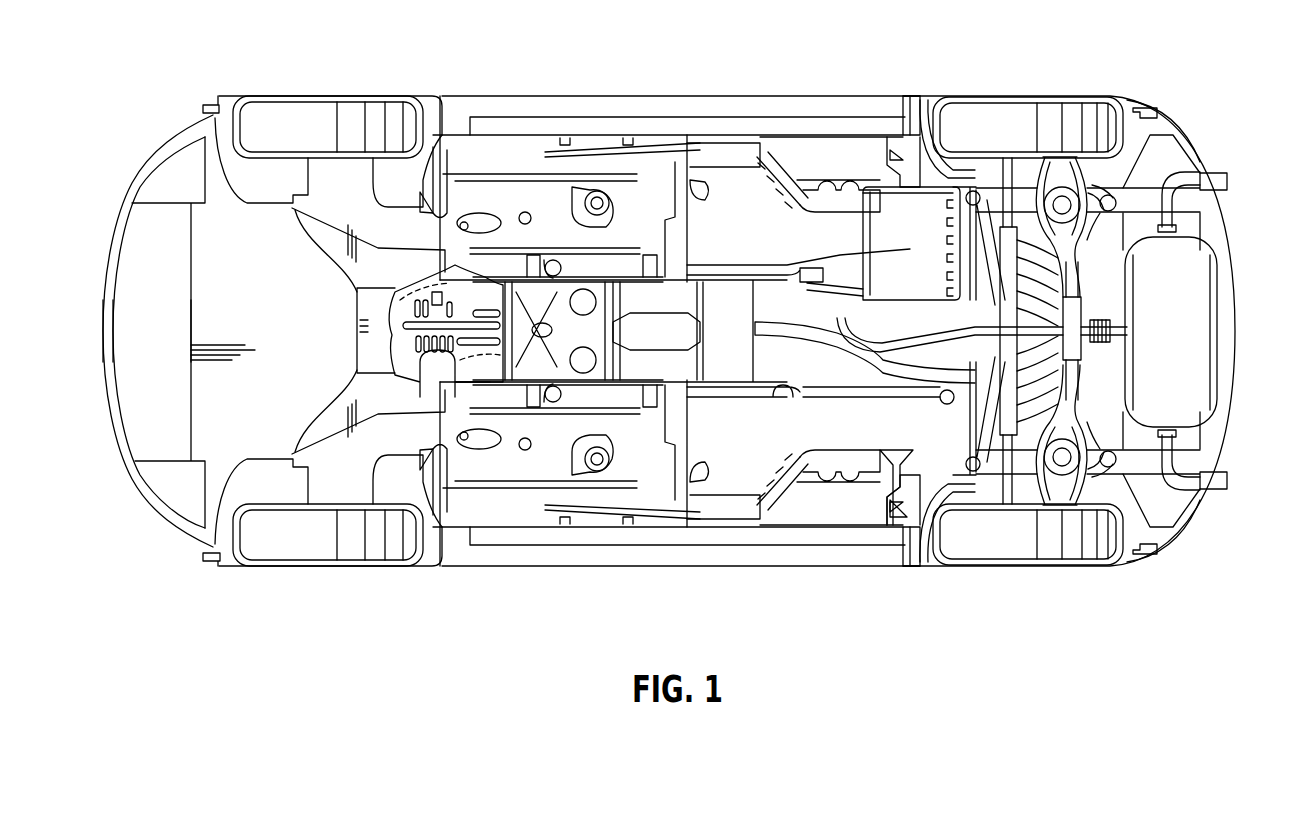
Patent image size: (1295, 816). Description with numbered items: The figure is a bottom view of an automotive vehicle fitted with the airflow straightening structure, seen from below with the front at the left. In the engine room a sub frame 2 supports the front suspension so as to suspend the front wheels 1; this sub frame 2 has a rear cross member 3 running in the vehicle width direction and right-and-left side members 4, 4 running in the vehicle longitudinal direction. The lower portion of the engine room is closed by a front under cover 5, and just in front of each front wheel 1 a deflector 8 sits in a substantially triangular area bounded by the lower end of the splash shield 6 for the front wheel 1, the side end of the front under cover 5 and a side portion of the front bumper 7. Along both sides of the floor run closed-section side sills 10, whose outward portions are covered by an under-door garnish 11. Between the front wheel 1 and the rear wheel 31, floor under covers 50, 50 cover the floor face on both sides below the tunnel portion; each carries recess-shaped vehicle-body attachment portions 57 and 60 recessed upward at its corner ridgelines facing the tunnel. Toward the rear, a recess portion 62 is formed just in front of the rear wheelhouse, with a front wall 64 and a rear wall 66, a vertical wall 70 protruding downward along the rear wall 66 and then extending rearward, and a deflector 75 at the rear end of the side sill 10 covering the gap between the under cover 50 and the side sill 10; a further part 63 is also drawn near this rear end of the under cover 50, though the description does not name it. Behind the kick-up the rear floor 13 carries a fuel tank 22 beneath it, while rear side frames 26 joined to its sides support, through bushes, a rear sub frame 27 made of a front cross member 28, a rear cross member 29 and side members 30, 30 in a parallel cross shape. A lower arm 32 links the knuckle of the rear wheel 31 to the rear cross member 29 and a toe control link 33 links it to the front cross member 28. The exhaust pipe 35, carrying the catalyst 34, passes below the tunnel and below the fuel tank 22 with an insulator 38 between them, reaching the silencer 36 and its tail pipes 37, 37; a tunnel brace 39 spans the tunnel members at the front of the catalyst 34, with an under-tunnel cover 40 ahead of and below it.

The front wheels 1 is at (283, 110).
The sub frame 2 is at (376, 246).
The rear cross member 3 is at (365, 303).
The side members 4 is at (320, 223).
The front under cover 5 is at (235, 300).
The splash shield 6 is at (240, 177).
The front bumper 7 is at (137, 164).
The deflector 8 is at (163, 156).
The side sills 10 is at (527, 130).
The under-door garnish 11 is at (571, 96).
The rear floor 13 is at (1167, 133).
The fuel tank 22 is at (868, 305).
The rear side frames 26 is at (1190, 200).
The rear sub frame 27 is at (1082, 300).
The front cross member 28 is at (1082, 275).
The rear cross member 29 is at (1077, 355).
The side members 30 is at (1106, 195).
The rear wheel 31 is at (1080, 96).
The lower arm 32 is at (1035, 135).
The toe control link 33 is at (998, 170).
The catalyst 34 is at (658, 325).
The exhaust pipe 35 is at (773, 320).
The silencer 36 is at (1195, 325).
The tail pipes 37 is at (1185, 178).
The insulator 38 is at (890, 328).
The tunnel brace 39 is at (572, 375).
The under-tunnel cover 40 is at (476, 382).
The floor under covers 50 is at (600, 140).
The vehicle-body attachment portion 57 is at (555, 260).
The vehicle-body attachment portion 60 is at (685, 258).
The recess portion 62 is at (835, 150).
The bracket 63 is at (915, 130).
The front wall 64 is at (770, 130).
The rear wall 66 is at (885, 130).
The vertical wall 70 is at (895, 475).
The deflector 75 is at (957, 130).